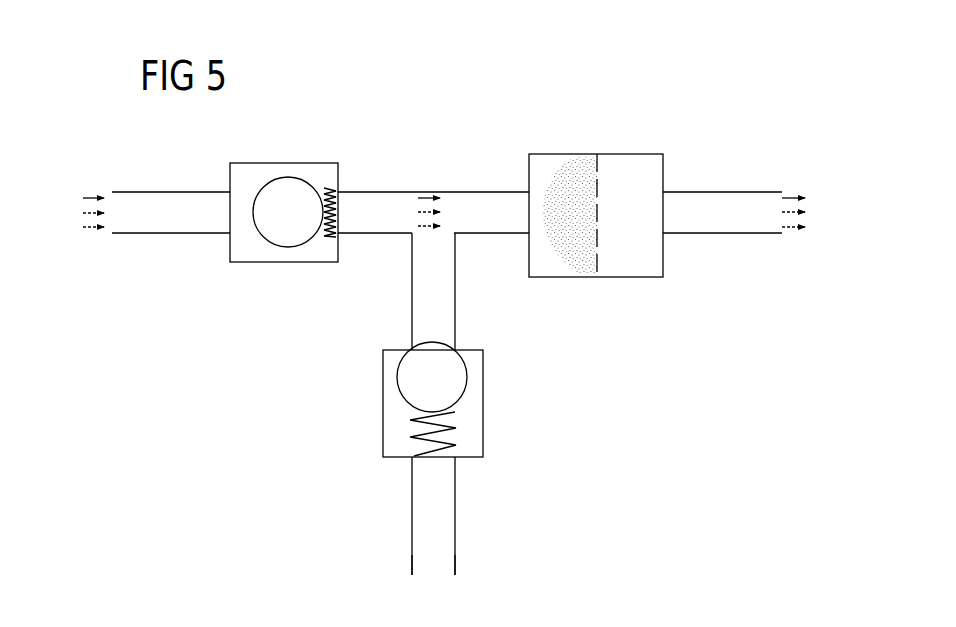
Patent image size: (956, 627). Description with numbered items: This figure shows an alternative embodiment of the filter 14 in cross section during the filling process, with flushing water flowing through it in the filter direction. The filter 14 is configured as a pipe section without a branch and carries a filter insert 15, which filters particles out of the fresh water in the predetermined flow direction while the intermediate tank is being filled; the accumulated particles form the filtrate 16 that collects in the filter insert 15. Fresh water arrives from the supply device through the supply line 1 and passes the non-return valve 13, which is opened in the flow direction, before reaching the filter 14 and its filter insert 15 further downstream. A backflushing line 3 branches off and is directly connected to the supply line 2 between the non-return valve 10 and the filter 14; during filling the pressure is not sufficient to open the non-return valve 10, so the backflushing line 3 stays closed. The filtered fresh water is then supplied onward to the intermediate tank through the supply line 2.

The supply line 1 is at (108, 196).
The supply line 2 is at (784, 197).
The backflushing line 3 is at (434, 570).
The non-return valve 10 is at (483, 407).
The non-return valve 13 is at (281, 163).
The filter 14 is at (607, 154).
The filter insert 15 is at (597, 248).
The filtrate 16 is at (572, 175).